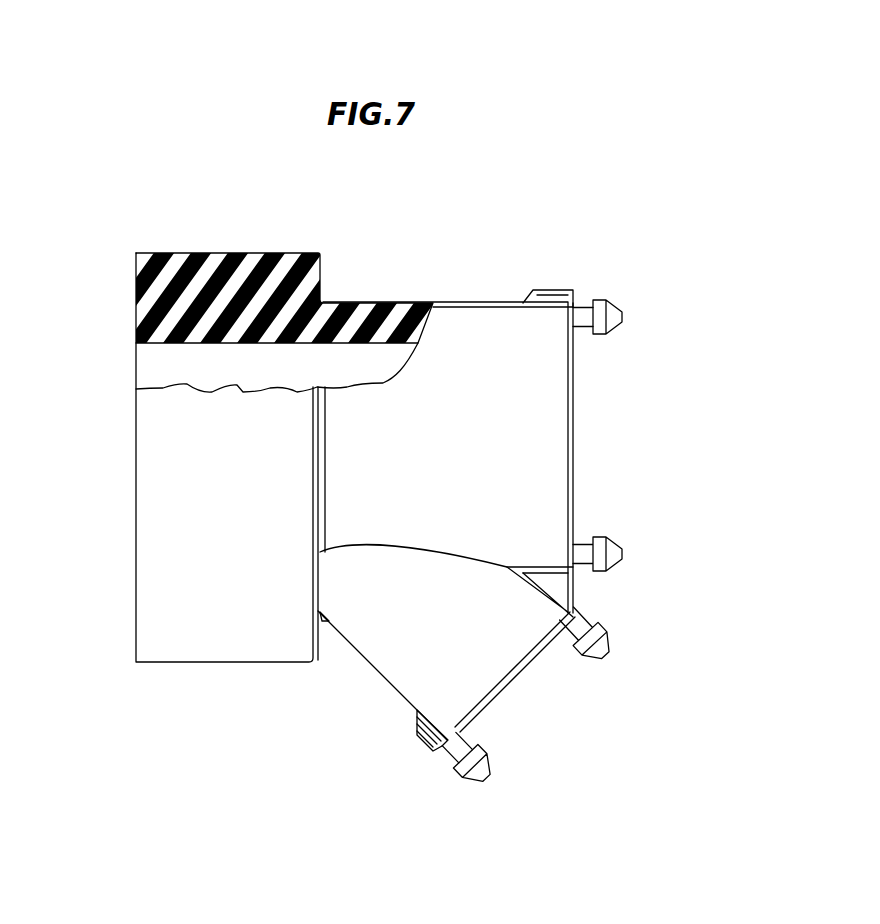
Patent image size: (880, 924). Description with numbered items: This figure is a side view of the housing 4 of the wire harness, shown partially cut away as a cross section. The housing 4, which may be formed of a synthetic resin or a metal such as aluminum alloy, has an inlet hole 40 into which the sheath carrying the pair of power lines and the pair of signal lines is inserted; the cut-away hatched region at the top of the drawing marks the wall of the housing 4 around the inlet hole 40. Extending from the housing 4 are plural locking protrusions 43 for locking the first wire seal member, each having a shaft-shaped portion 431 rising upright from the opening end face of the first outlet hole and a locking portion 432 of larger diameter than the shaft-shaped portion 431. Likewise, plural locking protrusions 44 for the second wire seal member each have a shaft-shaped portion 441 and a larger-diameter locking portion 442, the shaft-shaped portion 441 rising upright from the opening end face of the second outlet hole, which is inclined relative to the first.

The housing 4 is at (508, 544).
The inlet hole 40 is at (157, 343).
The locking protrusion 43 is at (650, 368).
The shaft-shaped portion 431 is at (583, 306).
The locking portion 432 is at (619, 307).
The locking protrusion 44 is at (487, 763).
The shaft-shaped portion 441 is at (452, 758).
The locking portion 442 is at (475, 781).